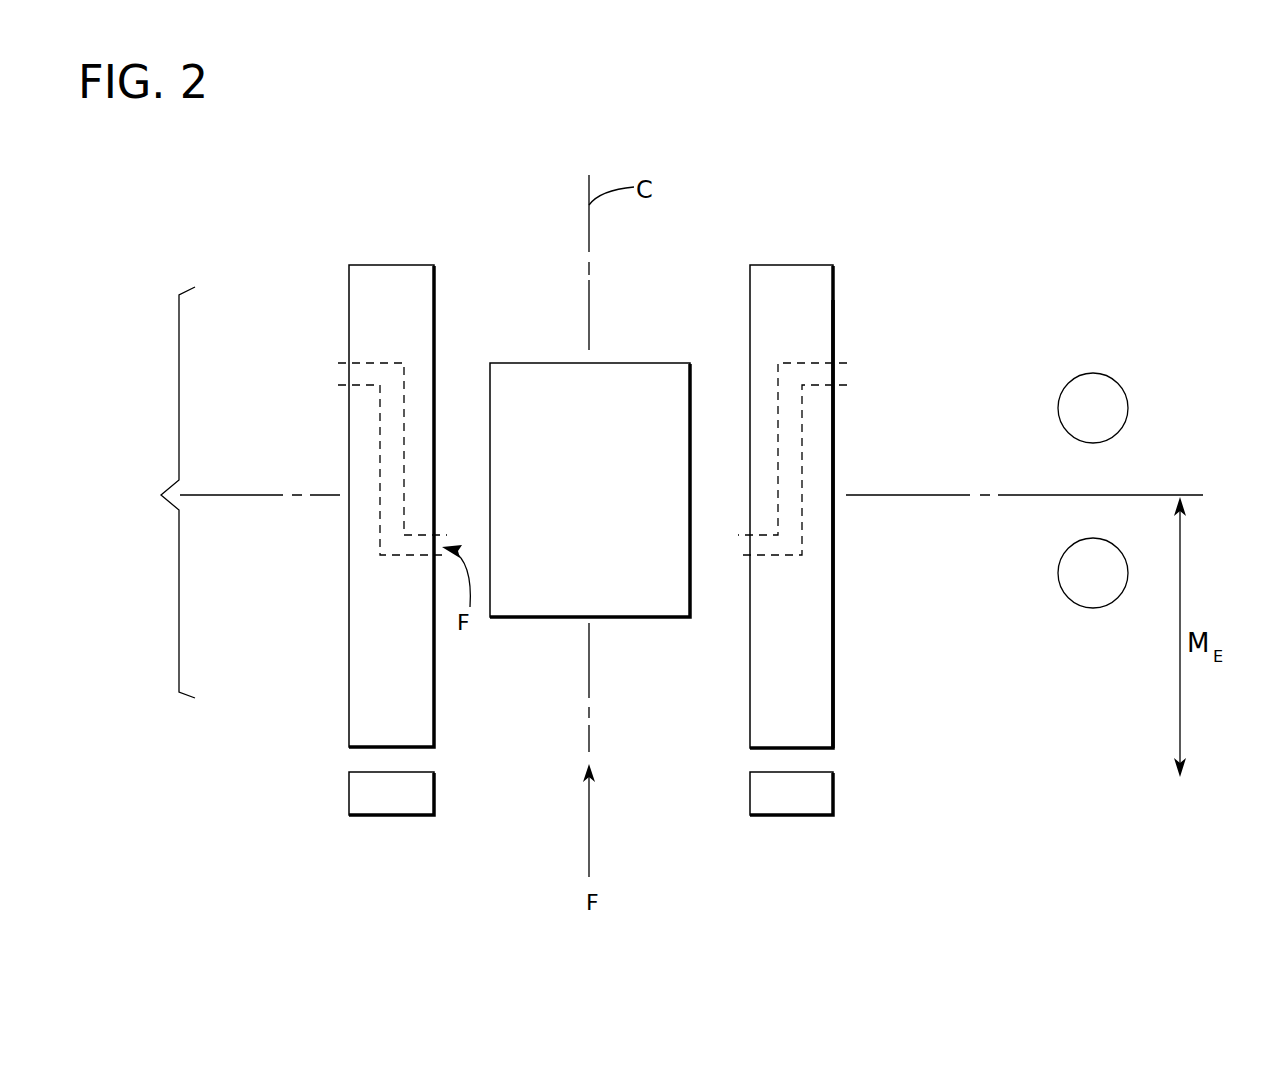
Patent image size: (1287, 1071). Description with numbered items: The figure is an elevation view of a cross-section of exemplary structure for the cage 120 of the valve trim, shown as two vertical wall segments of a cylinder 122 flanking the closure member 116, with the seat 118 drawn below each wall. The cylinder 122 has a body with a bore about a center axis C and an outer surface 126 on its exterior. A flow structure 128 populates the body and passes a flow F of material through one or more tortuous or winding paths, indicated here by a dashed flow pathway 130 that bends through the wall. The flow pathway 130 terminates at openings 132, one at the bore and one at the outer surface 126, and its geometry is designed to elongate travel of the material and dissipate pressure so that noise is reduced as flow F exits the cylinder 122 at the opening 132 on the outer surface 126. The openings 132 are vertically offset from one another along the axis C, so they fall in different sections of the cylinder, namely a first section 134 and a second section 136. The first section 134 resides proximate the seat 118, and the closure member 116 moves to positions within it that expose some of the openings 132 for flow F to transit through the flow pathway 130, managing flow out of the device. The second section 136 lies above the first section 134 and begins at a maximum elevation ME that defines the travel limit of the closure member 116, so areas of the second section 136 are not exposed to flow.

The closure member 116 is at (566, 508).
The seat 118 is at (835, 791).
The cage 120 is at (822, 258).
The cylinder 122 is at (818, 418).
The outer surface 126 is at (835, 607).
The flow structure 128 is at (154, 492).
The flow pathway 130 is at (343, 500).
The openings 132 is at (382, 457).
The first section 134 is at (1093, 573).
The second section 136 is at (1093, 408).